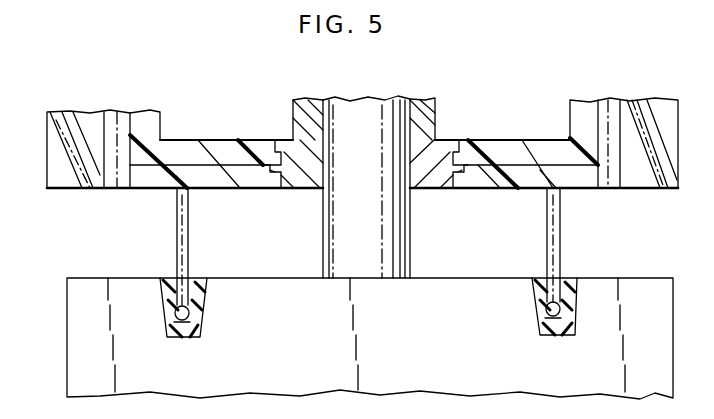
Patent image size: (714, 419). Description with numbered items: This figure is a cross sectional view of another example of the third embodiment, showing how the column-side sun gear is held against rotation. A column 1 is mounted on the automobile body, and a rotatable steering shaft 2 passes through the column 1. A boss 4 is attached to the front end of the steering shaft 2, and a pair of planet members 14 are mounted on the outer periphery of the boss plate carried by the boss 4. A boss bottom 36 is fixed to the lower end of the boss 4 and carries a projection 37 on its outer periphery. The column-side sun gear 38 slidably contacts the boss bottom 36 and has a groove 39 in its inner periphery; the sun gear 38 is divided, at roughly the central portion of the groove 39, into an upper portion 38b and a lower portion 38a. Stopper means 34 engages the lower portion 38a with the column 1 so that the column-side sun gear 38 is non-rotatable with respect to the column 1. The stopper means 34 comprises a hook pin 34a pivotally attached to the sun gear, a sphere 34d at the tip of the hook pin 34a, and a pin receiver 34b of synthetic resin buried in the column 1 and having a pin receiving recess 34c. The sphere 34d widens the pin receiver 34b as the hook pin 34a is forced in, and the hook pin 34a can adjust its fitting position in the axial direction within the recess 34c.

The column 1 is at (70, 312).
The steering shaft 2 is at (400, 248).
The boss 4 is at (311, 110).
The planet member 14 is at (55, 143).
The stopper means 34 is at (368, 263).
The hook pin 34a is at (190, 254).
The pin receiver 34b is at (200, 295).
The pin receiving recess 34c is at (175, 316).
The sphere 34d is at (196, 322).
The boss bottom 36 is at (302, 182).
The projection 37 is at (268, 152).
The column-side sun gear 38 is at (160, 120).
The lower portion 38a is at (207, 183).
The upper portion 38b is at (193, 150).
The groove 39 is at (268, 172).